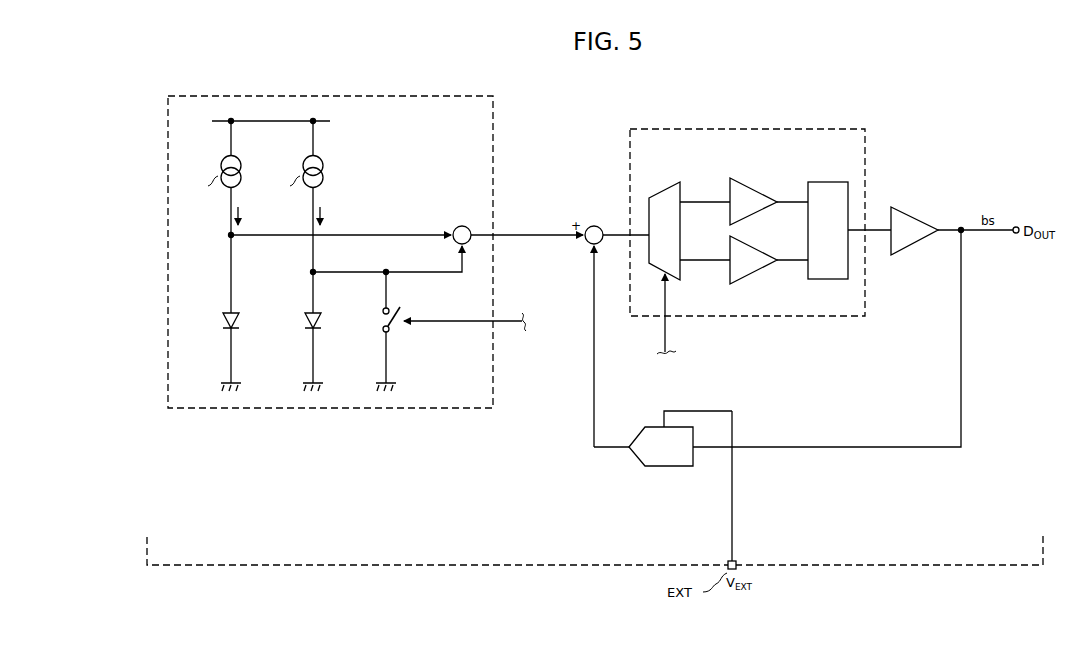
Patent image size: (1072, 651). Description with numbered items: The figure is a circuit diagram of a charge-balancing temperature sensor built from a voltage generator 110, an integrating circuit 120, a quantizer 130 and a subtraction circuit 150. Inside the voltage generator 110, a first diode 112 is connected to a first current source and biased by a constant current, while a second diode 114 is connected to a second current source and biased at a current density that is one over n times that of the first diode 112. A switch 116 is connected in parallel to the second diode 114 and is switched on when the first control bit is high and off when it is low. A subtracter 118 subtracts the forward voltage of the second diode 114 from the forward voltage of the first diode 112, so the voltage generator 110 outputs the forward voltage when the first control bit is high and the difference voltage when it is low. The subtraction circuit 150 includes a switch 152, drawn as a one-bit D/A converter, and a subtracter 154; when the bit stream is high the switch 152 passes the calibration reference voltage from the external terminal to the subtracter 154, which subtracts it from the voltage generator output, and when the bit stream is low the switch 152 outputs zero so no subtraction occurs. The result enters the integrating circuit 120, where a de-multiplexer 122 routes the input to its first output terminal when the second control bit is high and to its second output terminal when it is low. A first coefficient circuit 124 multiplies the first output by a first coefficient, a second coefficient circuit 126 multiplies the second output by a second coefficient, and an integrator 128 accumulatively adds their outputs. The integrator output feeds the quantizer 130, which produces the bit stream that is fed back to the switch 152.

The voltage generator 110 is at (341, 97).
The first diode 112 is at (222, 326).
The second diode 114 is at (304, 326).
The switch 116 is at (381, 326).
The subtracter 118 is at (462, 226).
The integrating circuit 120 is at (781, 129).
The de-multiplexer 122 is at (656, 192).
The first coefficient circuit 124 is at (750, 180).
The second coefficient circuit 126 is at (764, 276).
The integrator 128 is at (829, 182).
The quantizer 130 is at (906, 207).
The subtraction circuit 150 is at (759, 360).
The switch 152 is at (777, 368).
The subtracter 154 is at (594, 226).